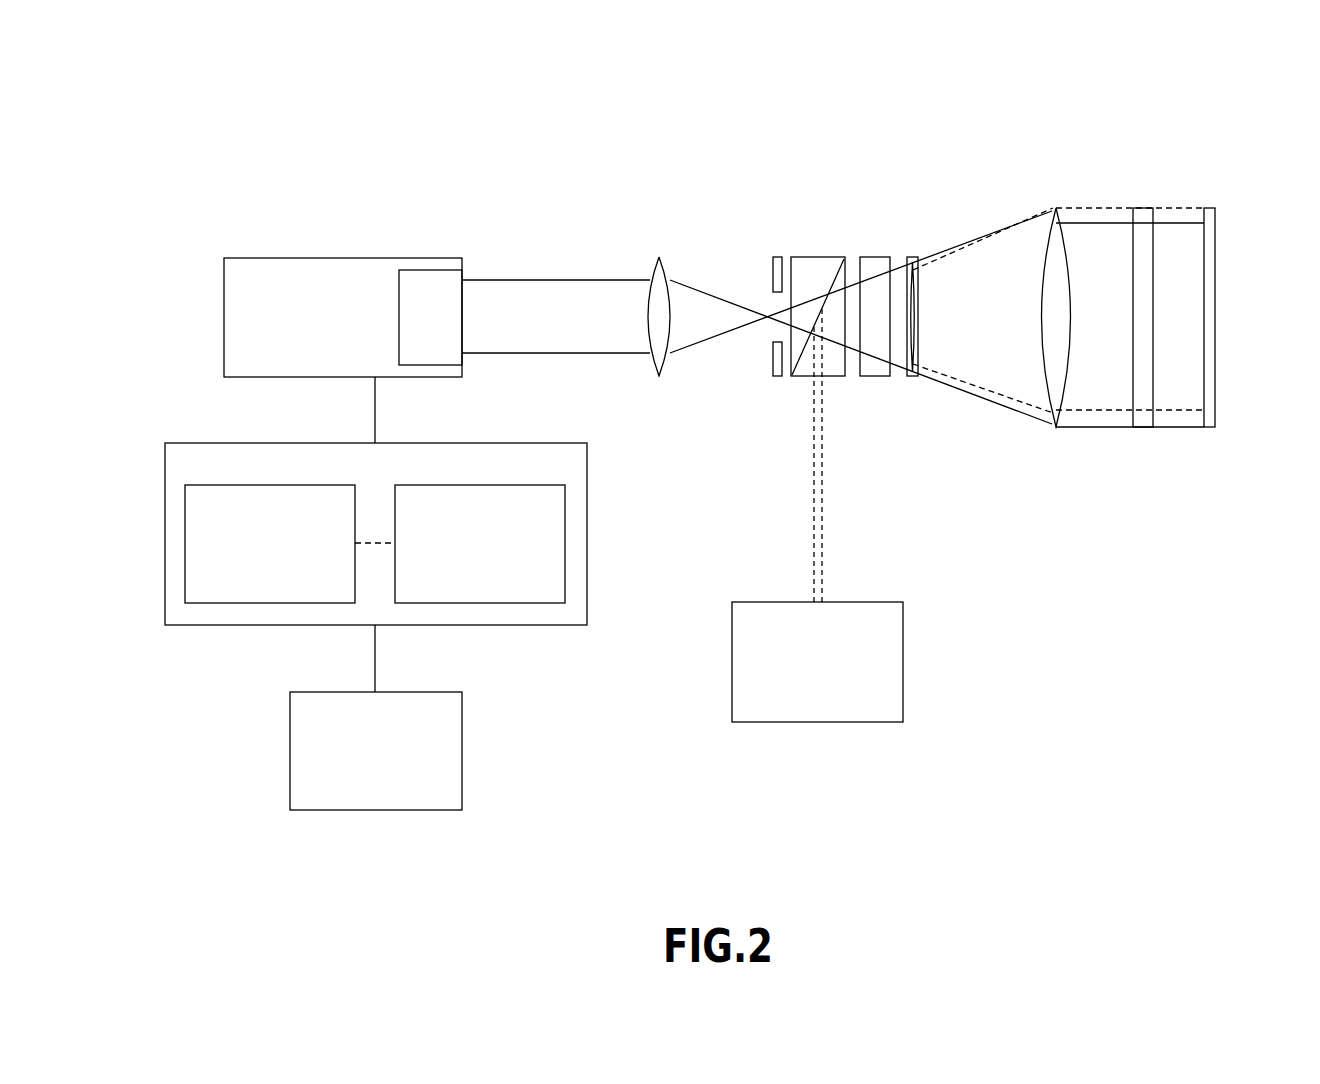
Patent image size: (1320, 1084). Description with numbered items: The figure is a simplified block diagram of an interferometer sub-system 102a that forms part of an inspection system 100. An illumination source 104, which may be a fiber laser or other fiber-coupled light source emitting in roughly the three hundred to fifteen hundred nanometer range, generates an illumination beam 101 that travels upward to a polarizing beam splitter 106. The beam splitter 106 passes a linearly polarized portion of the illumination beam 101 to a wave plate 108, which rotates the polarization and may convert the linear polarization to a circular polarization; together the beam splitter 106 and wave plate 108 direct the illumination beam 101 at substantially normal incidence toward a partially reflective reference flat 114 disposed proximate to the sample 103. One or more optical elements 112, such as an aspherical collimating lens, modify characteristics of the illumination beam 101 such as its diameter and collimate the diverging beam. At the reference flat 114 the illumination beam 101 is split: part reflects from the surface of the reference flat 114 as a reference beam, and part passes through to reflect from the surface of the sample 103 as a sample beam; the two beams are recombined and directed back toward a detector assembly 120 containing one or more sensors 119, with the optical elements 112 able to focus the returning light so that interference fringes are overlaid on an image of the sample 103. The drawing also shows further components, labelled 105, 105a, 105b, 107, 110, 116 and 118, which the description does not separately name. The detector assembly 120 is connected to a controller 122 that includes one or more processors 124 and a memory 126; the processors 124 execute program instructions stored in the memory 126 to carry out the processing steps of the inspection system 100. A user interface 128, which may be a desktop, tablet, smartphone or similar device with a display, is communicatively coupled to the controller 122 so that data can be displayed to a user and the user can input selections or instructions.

The inspection system 100 is at (216, 89).
The interferometer sub-system 102a is at (255, 203).
The detector assembly 120 is at (268, 283).
The sensors 119 is at (450, 329).
The collection path 107 is at (557, 353).
The collection lens 118 is at (658, 257).
The controller 122 is at (207, 469).
The processors 124 is at (228, 511).
The memory 126 is at (438, 511).
The user interface 128 is at (335, 721).
The illumination source 104 is at (777, 627).
The illumination beam 101 is at (816, 575).
The aperture 116 is at (777, 257).
The beam splitter 106 is at (817, 257).
The wave plate 108 is at (875, 377).
The optical element 110 is at (912, 257).
The objective assembly 105 is at (1205, 137).
The optical elements 112 is at (1056, 208).
The reference flat 114 is at (1145, 208).
The illumination beam path 105a is at (1184, 208).
The objective housing 105b is at (1184, 223).
The sample 103 is at (1215, 318).